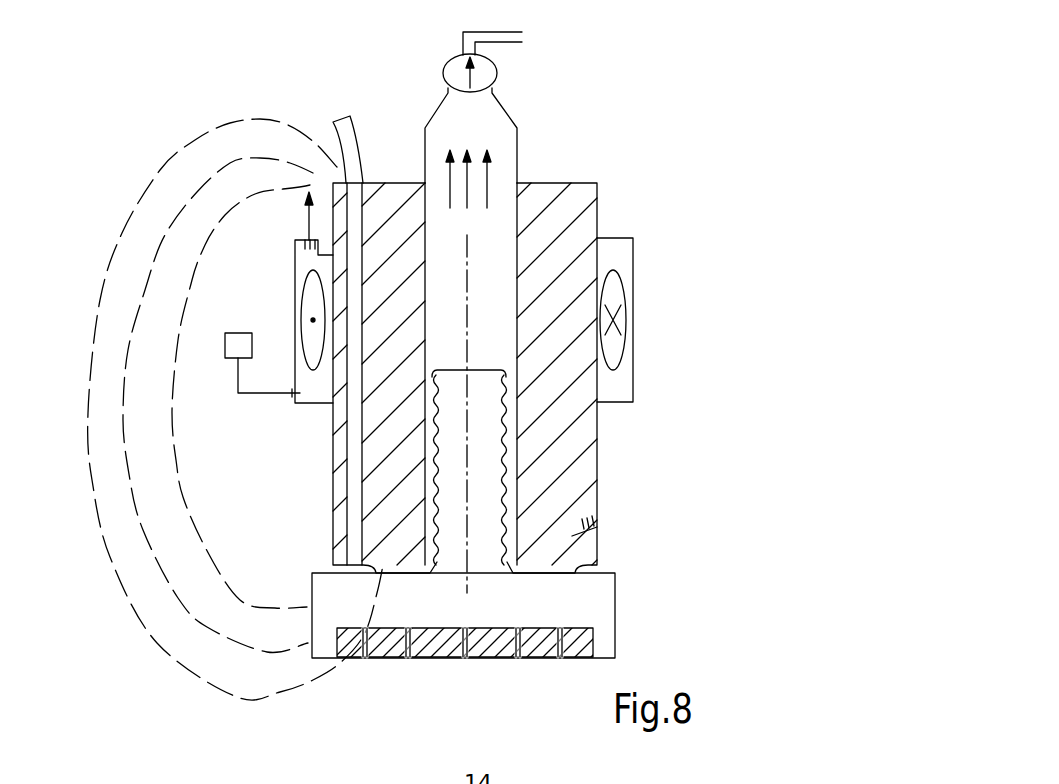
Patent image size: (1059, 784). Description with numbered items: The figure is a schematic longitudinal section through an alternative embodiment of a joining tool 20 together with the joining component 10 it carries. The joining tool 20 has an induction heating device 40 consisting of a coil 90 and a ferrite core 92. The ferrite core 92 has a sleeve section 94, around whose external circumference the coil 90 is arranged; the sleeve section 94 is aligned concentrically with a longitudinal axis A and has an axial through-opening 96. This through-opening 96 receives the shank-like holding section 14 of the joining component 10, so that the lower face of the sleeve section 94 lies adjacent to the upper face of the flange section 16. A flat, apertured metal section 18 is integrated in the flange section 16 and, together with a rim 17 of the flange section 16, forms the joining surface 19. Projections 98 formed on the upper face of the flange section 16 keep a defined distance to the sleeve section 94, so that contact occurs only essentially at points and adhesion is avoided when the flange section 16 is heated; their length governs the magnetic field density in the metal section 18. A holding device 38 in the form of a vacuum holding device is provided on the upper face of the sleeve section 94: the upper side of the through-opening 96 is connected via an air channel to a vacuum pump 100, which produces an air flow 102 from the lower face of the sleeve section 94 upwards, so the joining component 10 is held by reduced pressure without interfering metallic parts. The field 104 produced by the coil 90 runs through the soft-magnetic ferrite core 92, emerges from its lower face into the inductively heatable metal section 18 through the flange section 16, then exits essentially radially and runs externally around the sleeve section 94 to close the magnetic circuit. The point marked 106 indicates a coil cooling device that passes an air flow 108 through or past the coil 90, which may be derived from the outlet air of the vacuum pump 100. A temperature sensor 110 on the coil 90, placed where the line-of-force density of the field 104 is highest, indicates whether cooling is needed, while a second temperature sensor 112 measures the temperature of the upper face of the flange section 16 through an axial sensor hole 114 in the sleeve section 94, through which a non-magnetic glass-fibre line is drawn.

The joining component 10 is at (309, 613).
The holding section 14 is at (455, 470).
The flange section 16 is at (597, 598).
The rim 17 is at (602, 640).
The metal section 18 is at (487, 640).
The joining surface 19 is at (390, 658).
The joining tool 20 is at (719, 134).
The vacuum holding device 38 is at (514, 109).
The induction heating device 40 is at (639, 234).
The coil 90 is at (620, 380).
The ferrite core 92 is at (604, 484).
The sleeve section 94 is at (598, 526).
The through-opening 96 is at (477, 340).
The projections 98 is at (590, 568).
The vacuum pump 100 is at (450, 72).
The air flow 102 is at (487, 177).
The field 104 is at (165, 240).
The coil cooling device 106 is at (232, 333).
The air flow 108 is at (258, 392).
The temperature sensor 110 is at (328, 243).
The second temperature sensor 112 is at (350, 553).
The sensor hole 114 is at (353, 492).
The longitudinal axis A is at (467, 292).